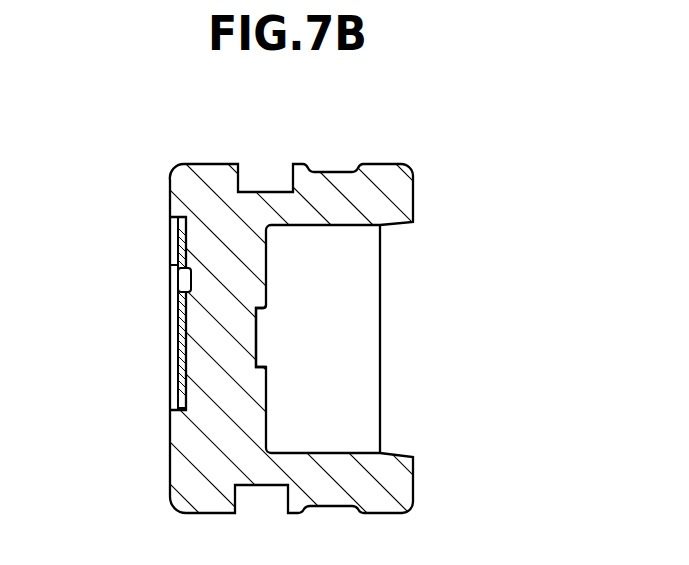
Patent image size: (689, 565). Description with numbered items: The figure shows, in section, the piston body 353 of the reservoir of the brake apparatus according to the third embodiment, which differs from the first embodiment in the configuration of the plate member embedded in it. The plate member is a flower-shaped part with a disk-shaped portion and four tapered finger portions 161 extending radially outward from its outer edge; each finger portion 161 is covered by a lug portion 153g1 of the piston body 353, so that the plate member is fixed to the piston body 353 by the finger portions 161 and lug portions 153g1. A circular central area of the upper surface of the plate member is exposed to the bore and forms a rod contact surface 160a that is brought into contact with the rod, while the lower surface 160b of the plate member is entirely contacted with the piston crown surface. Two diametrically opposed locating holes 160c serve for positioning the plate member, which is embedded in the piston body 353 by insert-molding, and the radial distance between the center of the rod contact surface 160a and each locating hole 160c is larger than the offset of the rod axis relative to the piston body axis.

The piston body 353 is at (435, 183).
The finger portion 161 is at (183, 231).
The rod contact surface 160a is at (170, 350).
The lower surface 160b is at (186, 398).
The locating hole 160c is at (170, 283).
The lug portion 153g1 is at (170, 250).